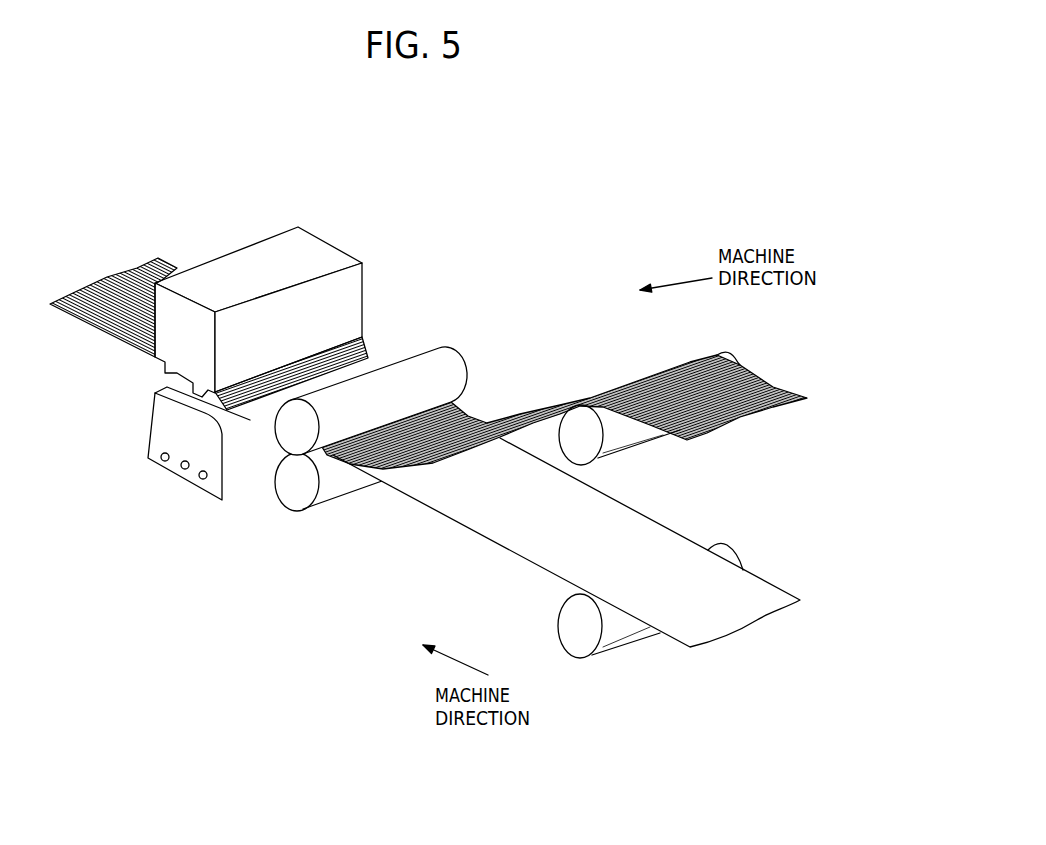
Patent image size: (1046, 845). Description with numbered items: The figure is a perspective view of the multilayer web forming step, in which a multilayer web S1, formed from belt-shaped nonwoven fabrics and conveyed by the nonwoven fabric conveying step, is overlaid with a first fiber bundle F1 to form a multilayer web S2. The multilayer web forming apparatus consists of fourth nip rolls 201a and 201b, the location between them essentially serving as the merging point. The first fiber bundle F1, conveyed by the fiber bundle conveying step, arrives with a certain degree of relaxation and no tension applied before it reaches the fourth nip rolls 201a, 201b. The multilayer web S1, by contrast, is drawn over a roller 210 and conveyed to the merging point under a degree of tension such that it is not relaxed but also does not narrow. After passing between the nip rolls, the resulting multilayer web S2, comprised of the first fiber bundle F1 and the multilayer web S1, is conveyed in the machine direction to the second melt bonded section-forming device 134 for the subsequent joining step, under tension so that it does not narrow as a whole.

The second melt bonded section-forming device 134 is at (108, 433).
The multilayer web S2 is at (120, 300).
The fourth nip roll 201a is at (413, 372).
The fourth nip roll 201b is at (337, 488).
The first fiber bundle F1 is at (488, 412).
The roller 210 is at (614, 440).
The multilayer web S1 is at (667, 557).